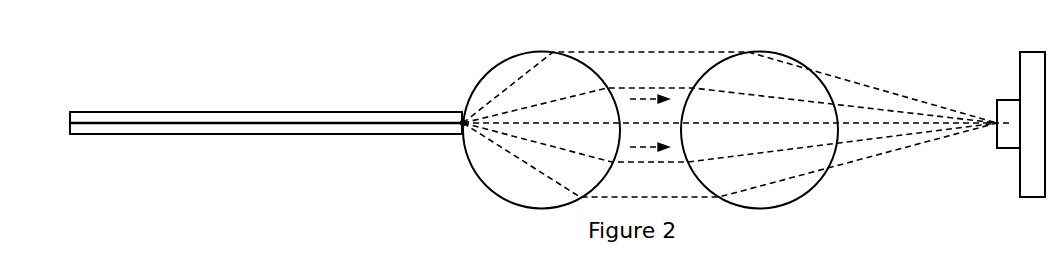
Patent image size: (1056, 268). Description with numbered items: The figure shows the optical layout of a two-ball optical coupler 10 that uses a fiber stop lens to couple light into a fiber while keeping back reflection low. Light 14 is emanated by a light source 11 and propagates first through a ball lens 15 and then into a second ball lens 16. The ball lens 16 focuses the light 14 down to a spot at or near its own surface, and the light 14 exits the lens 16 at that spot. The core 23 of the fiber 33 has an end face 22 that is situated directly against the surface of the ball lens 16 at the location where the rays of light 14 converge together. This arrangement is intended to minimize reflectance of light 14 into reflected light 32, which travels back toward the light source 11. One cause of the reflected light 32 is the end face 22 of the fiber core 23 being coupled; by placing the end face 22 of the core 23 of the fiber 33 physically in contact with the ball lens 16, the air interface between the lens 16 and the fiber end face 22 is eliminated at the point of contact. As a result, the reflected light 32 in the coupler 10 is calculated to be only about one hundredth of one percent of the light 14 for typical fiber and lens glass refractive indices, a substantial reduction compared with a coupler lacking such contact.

The two-ball optical coupler 10 is at (904, 32).
The light source 11 is at (1003, 128).
The light 14 is at (736, 124).
The ball lens 15 is at (779, 130).
The ball lens 16 is at (541, 116).
The end face 22 is at (438, 151).
The core 23 is at (266, 107).
The reflected light 32 is at (659, 106).
The fiber 33 is at (266, 96).